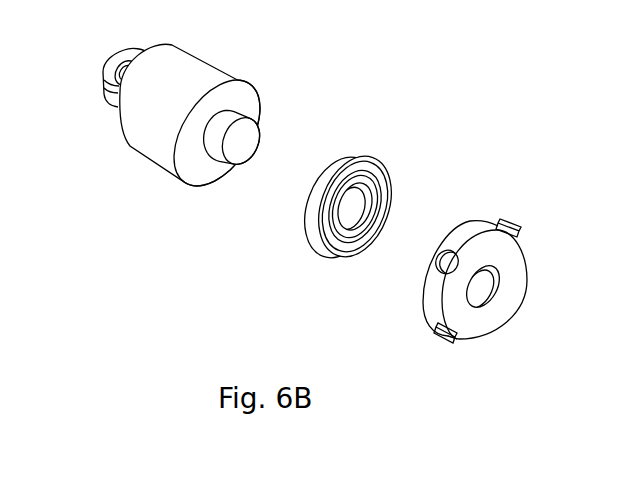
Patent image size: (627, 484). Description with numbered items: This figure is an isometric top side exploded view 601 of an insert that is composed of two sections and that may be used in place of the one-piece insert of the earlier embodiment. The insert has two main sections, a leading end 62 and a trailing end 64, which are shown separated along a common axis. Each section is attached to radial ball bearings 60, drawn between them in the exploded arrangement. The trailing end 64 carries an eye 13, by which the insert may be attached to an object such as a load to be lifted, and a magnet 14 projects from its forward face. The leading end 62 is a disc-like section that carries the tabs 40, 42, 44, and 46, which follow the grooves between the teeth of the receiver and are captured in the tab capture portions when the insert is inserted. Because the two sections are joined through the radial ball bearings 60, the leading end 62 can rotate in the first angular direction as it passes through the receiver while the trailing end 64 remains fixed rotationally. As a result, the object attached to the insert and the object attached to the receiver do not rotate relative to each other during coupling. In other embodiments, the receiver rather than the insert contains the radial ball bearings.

The eye 13 is at (110, 73).
The first magnet 14 is at (250, 138).
The trailing end 64 is at (208, 70).
The radial ball bearings 60 is at (368, 158).
The leading end 62 is at (517, 270).
The tab 46 is at (513, 307).
The tab 42 is at (447, 253).
The tab 40 is at (512, 227).
The tab 44 is at (442, 343).
The exploded view of the insert 601 is at (398, 80).